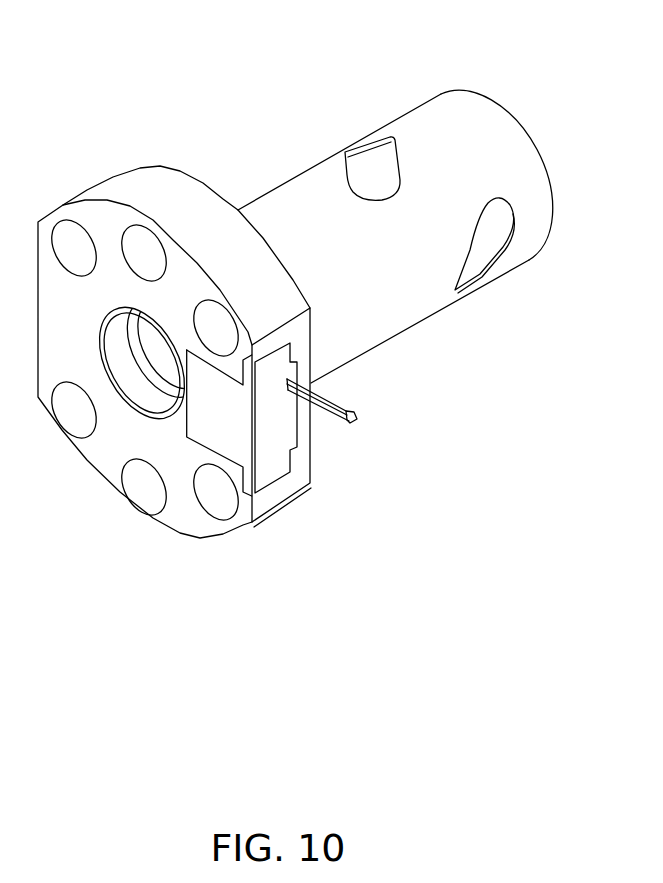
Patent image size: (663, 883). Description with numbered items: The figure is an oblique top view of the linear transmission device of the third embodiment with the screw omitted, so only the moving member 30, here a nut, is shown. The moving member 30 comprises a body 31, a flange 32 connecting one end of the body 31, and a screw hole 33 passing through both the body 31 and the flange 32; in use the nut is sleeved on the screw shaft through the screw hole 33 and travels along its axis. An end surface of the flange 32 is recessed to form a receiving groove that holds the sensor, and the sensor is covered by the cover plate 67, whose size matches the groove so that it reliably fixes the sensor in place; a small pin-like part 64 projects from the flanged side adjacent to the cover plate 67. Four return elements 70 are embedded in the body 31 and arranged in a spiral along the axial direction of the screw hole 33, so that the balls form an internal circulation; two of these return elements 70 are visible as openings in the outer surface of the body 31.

The moving member 30 is at (167, 90).
The body 31 is at (285, 195).
The flange 32 is at (178, 185).
The screw hole 33 is at (172, 370).
The pin 64 is at (325, 422).
The cover plate 67 is at (223, 418).
The return element 70 is at (372, 160).